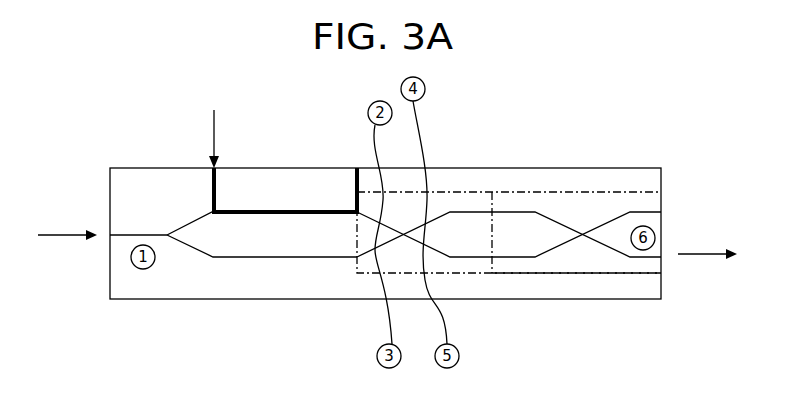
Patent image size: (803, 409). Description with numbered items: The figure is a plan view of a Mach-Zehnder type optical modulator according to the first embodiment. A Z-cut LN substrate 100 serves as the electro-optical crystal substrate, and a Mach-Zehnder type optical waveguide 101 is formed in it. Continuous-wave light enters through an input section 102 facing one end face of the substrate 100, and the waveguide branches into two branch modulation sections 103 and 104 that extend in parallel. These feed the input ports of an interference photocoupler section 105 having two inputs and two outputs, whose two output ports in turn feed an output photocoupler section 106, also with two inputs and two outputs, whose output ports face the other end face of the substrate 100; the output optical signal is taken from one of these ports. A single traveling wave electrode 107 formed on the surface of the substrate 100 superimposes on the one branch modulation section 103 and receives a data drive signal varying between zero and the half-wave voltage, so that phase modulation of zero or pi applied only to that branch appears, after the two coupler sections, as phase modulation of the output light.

The Z-cut LN substrate 100 is at (445, 168).
The Mach-Zehnder type optical waveguide 101 is at (342, 277).
The input section 102 is at (138, 234).
The branch modulation section 103 is at (278, 211).
The branch modulation section 104 is at (300, 258).
The interference photocoupler section 105 is at (462, 191).
The output photocoupler section 106 is at (588, 274).
The traveling wave electrode 107 is at (258, 214).